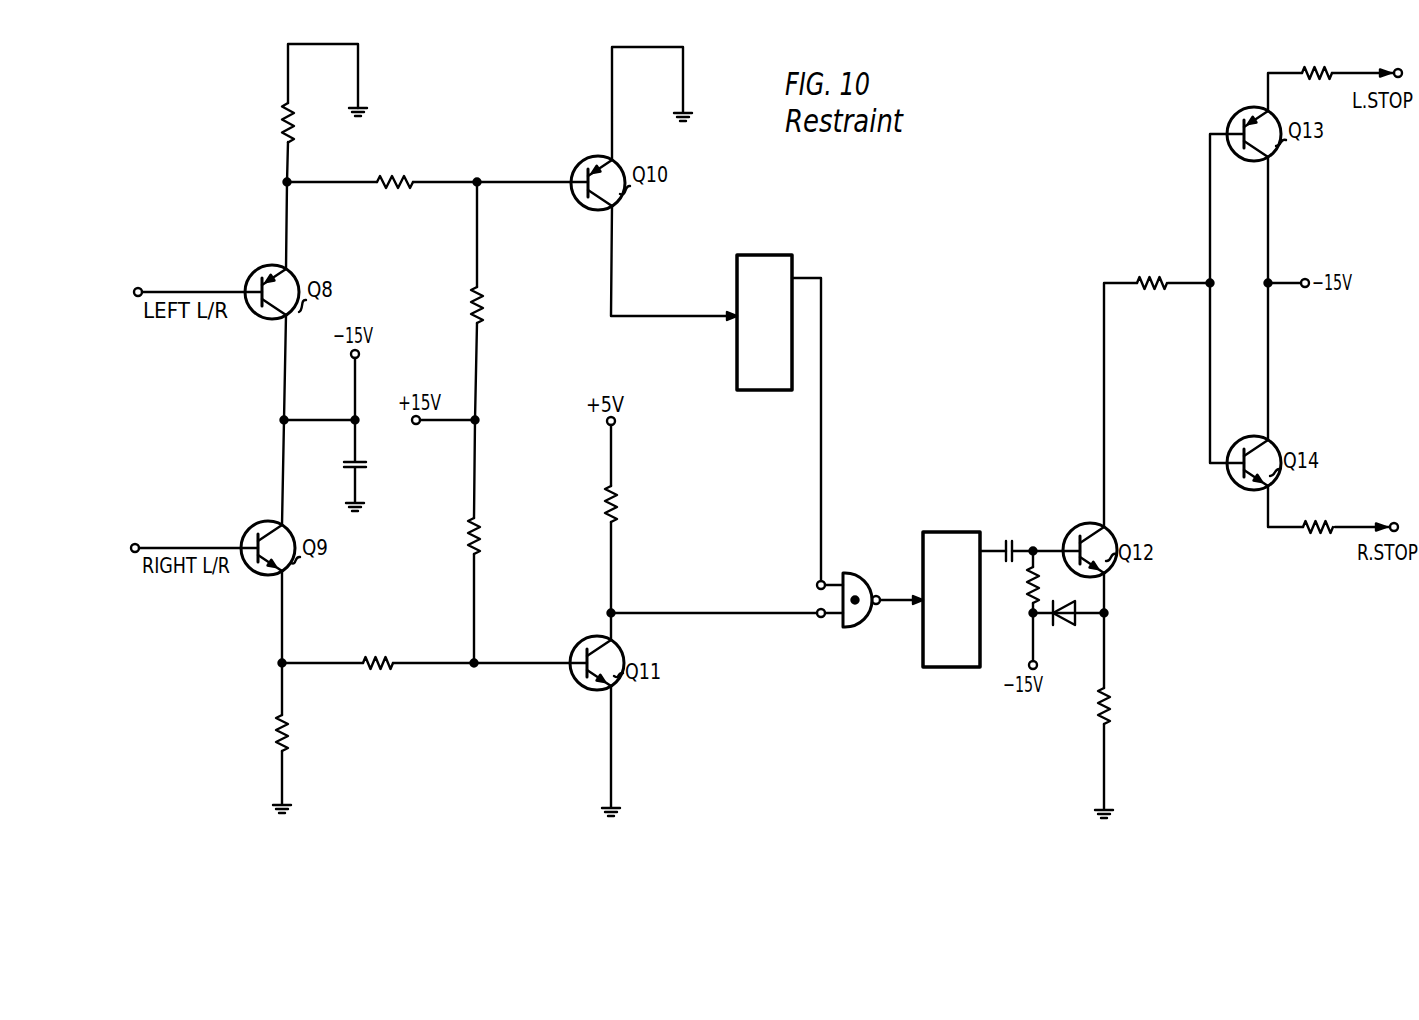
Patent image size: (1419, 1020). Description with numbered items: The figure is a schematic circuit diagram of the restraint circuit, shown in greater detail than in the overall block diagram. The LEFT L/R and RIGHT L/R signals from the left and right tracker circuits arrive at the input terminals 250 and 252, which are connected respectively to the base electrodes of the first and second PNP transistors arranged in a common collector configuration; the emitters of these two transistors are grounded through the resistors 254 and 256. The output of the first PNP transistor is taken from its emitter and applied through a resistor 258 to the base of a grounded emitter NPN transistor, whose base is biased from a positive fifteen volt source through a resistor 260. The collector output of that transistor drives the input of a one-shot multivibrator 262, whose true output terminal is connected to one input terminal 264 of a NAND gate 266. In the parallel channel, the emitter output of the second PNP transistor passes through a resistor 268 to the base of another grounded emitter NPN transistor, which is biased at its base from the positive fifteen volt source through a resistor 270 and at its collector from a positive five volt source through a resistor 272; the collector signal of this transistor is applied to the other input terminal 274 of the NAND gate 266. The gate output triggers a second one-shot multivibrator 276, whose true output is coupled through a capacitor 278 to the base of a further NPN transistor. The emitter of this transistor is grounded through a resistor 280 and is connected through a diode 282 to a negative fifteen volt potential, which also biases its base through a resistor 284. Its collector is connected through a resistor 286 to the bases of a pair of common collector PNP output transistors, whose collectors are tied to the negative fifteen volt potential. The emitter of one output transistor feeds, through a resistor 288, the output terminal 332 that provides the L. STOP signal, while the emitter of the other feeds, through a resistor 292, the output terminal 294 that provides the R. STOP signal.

The input terminal 250 is at (138, 288).
The input terminal 252 is at (135, 544).
The resistor 254 is at (283, 106).
The resistor 256 is at (286, 716).
The resistor 258 is at (413, 180).
The resistor 260 is at (483, 310).
The one-shot multivibrator 262 is at (790, 265).
The input terminal of NAND gate 264 is at (817, 586).
The NAND gate 266 is at (846, 576).
The resistor 268 is at (397, 662).
The resistor 270 is at (480, 540).
The resistor 272 is at (611, 512).
The input terminal of NAND gate 274 is at (822, 617).
The one-shot multivibrator 276 is at (942, 531).
The capacitor 278 is at (1019, 526).
The resistor 280 is at (1104, 715).
The diode 282 is at (1068, 630).
The resistor 284 is at (1025, 590).
The resistor 286 is at (1168, 283).
The resistor 288 is at (1330, 72).
The resistor 292 is at (1336, 526).
The output terminal 294 is at (1394, 523).
The output terminal 332 is at (1398, 69).